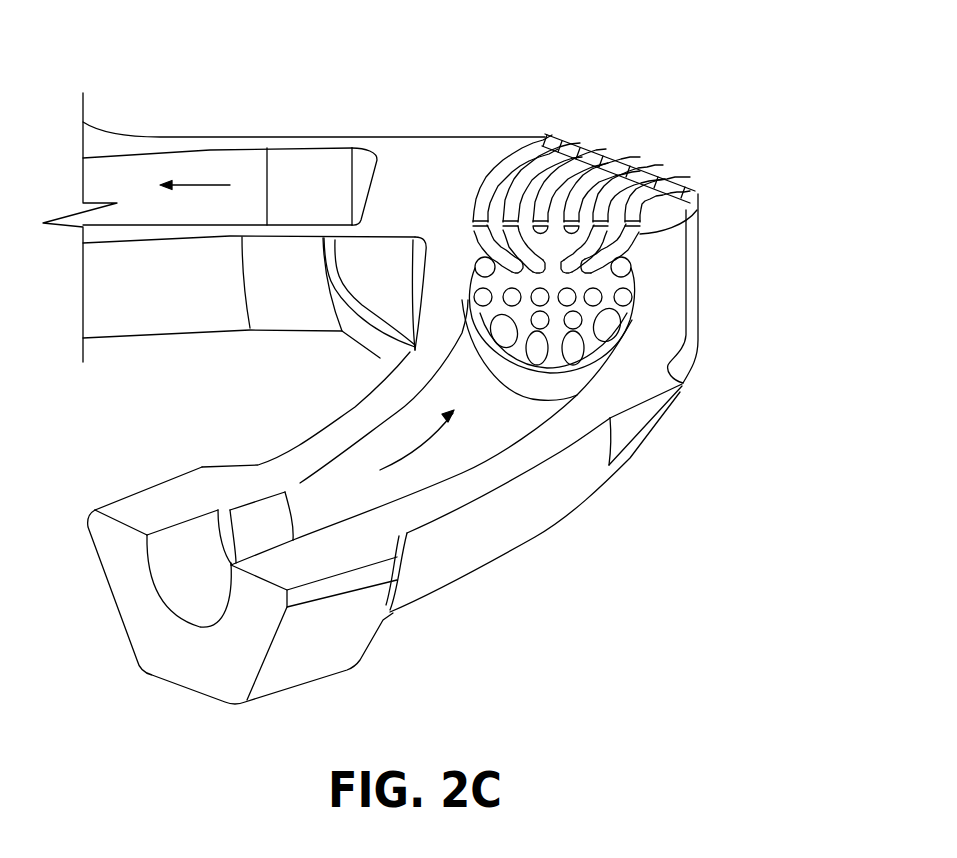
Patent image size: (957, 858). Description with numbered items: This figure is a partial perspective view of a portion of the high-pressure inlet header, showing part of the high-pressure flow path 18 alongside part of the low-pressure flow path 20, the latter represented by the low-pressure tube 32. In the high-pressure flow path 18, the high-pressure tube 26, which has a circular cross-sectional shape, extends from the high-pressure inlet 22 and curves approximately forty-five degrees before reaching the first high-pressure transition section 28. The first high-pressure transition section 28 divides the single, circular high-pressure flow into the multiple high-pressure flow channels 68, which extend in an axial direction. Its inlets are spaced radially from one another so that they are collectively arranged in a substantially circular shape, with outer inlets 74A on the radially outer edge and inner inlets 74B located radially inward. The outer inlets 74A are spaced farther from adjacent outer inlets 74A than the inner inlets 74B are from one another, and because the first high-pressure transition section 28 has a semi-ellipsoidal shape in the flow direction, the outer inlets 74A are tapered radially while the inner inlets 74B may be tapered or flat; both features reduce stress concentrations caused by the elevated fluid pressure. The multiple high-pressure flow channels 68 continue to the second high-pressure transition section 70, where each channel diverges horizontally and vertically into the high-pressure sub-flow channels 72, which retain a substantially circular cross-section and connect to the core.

The high-pressure flow path 18 is at (403, 455).
The low-pressure flow path 20 is at (212, 185).
The high-pressure inlet 22 is at (187, 540).
The high-pressure tube 26 is at (328, 482).
The first high-pressure transition section 28 is at (624, 376).
The low-pressure tube 32 is at (287, 175).
The multiple high-pressure flow channels 68 is at (700, 217).
The second high-pressure transition section 70 is at (548, 144).
The high-pressure sub-flow channels 72 is at (574, 145).
The outer inlets 74A is at (577, 355).
The inner inlets 74B is at (573, 317).